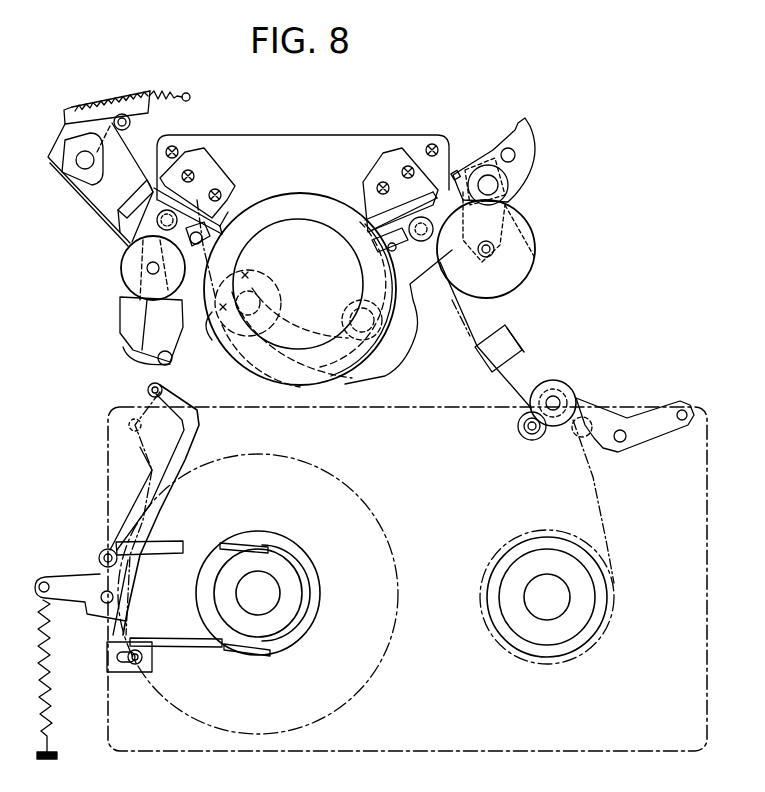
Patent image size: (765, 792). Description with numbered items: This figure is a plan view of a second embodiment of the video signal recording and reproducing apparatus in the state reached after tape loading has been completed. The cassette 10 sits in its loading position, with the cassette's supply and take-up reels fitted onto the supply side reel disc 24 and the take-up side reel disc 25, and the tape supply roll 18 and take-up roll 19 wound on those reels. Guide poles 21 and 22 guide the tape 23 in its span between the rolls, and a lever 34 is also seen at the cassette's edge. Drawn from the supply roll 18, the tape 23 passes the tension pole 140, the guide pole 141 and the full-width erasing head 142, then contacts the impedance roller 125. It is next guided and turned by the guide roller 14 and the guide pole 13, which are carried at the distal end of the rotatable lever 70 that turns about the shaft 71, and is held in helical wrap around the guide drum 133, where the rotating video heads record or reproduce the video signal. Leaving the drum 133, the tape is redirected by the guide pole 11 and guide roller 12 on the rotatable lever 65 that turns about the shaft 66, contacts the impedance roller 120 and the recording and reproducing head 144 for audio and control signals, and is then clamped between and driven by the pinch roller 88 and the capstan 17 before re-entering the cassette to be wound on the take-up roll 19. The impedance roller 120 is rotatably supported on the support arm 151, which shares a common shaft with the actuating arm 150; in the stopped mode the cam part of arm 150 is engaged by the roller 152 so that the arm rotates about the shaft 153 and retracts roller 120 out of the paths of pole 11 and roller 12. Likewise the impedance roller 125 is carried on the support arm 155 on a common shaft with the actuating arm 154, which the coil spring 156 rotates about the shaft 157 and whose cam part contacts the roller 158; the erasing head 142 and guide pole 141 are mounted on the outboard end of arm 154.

The cassette 10 is at (107, 498).
The guide pole 11 is at (380, 254).
The guide roller 12 is at (378, 162).
The guide pole 13 is at (212, 255).
The guide roller 14 is at (209, 182).
The capstan 17 is at (517, 430).
The tape supply roll 18 is at (345, 480).
The take-up roll 19 is at (532, 533).
The guide pole 21 is at (127, 426).
The guide pole 22 is at (577, 438).
The tape 23 is at (140, 455).
The supply side reel disc 24 is at (303, 558).
The take-up side reel disc 25 is at (556, 543).
The lever 34 is at (100, 548).
The rotatable lever 65 is at (385, 375).
The shaft 66 is at (262, 300).
The rotatable lever 70 is at (255, 272).
The shaft 71 is at (352, 310).
The pinch roller 88 is at (575, 392).
The impedance roller 120 is at (535, 236).
The impedance roller 125 is at (122, 271).
The guide drum 133 is at (300, 193).
The tension pole 140 is at (148, 390).
The guide pole 141 is at (125, 350).
The full-width erasing head 142 is at (176, 338).
The recording and reproducing head 144 is at (476, 358).
The actuating arm 150 is at (535, 175).
The support arm 151 is at (535, 258).
The roller 152 is at (516, 155).
The shaft 153 is at (500, 195).
The actuating arm 154 is at (100, 100).
The support arm 155 is at (120, 234).
The coil spring 156 is at (160, 93).
The shaft 157 is at (76, 165).
The roller 158 is at (131, 122).